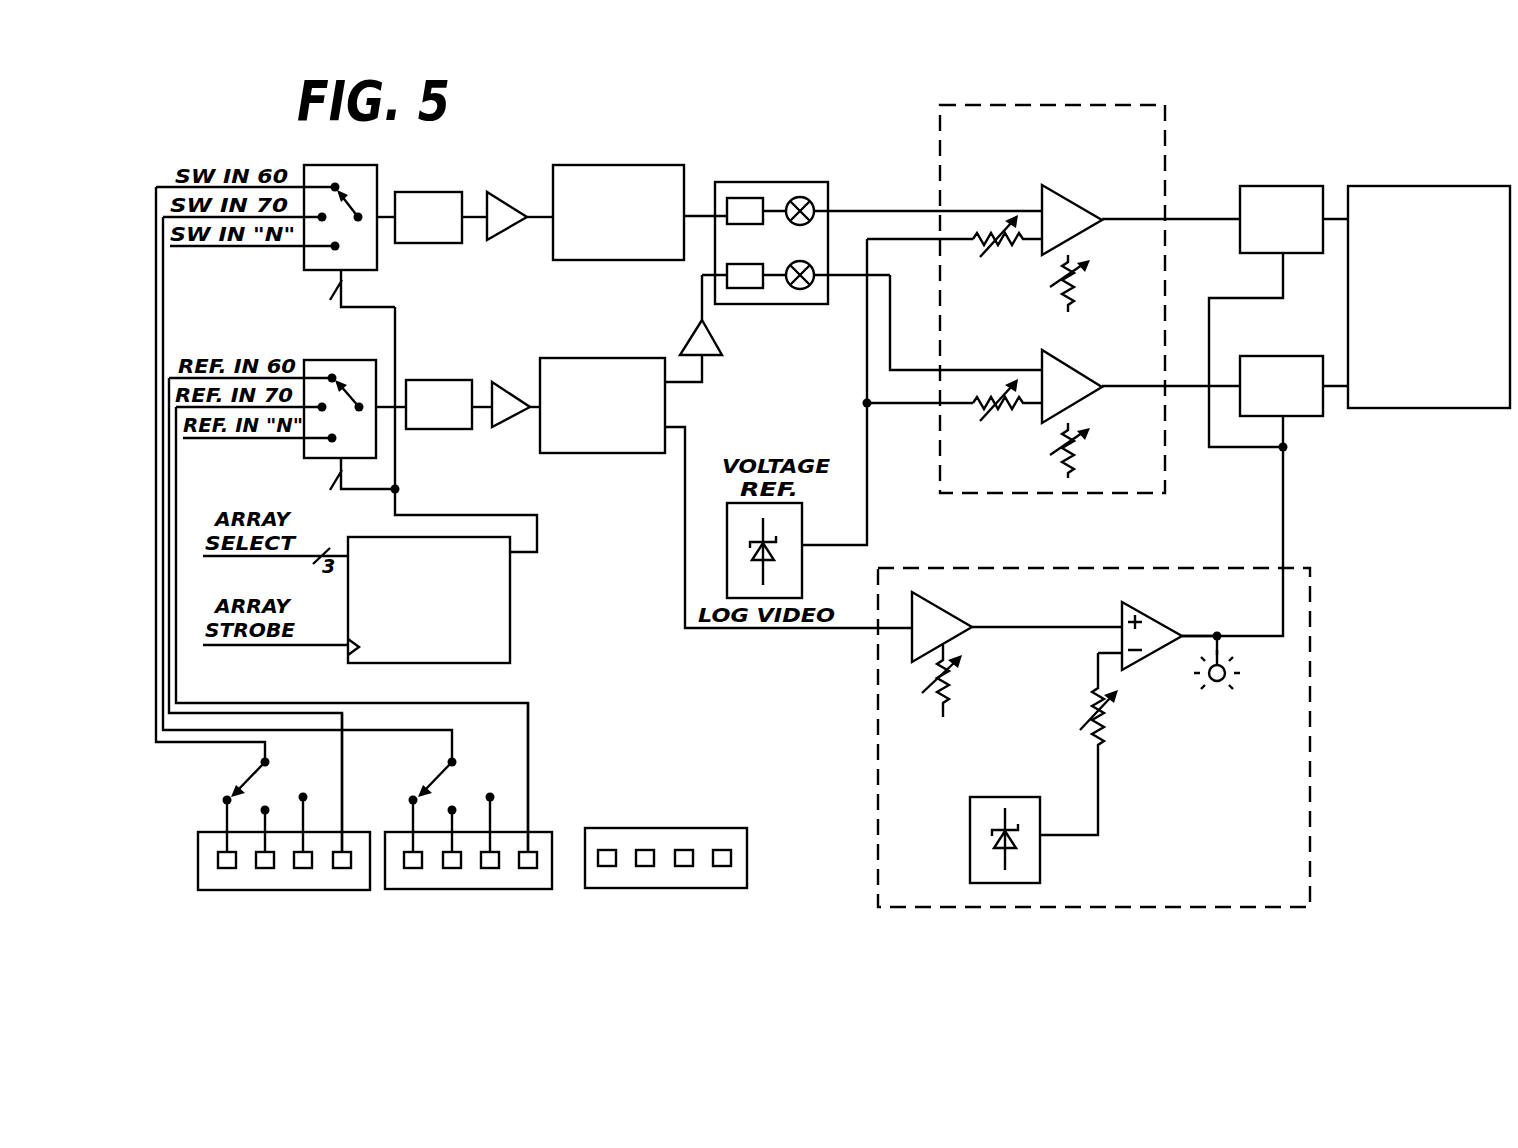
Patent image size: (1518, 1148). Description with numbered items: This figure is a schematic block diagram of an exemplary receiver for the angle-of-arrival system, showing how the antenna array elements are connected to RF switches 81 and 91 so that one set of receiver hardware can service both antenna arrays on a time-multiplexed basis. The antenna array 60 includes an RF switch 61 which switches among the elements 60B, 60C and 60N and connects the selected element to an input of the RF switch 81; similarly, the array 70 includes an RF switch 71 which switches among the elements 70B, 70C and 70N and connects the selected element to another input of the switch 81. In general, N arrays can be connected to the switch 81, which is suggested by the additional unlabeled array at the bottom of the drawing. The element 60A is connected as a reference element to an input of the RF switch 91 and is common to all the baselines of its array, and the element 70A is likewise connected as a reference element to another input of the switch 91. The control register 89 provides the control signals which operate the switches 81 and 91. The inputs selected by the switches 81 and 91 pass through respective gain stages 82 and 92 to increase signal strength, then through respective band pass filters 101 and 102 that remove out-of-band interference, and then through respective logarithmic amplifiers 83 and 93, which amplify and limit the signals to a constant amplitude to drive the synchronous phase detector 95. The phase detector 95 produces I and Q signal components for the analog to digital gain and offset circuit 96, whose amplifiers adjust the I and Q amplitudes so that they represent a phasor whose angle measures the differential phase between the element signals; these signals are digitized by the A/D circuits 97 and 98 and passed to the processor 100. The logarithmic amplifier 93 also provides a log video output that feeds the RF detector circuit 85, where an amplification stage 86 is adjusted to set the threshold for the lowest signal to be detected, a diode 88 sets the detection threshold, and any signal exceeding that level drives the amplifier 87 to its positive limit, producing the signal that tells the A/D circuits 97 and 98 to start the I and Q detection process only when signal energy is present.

The RF switch 81 is at (357, 165).
The band pass filter 101 is at (428, 192).
The gain stage 82 is at (505, 203).
The logarithmic amplifier 83 is at (612, 165).
The synchronous phase detector 95 is at (765, 304).
The analog to digital gain and offset circuit 96 is at (940, 131).
The A/D circuit 97 is at (1283, 186).
The A/D circuit 98 is at (1283, 356).
The processor 100 is at (1455, 186).
The RF switch 91 is at (305, 458).
The band pass filter 102 is at (443, 380).
The gain stage 92 is at (506, 422).
The logarithmic amplifier 93 is at (600, 453).
The control register 89 is at (510, 633).
The circuit 85 is at (1125, 737).
The amplification stage 86 is at (950, 612).
The amplifier 87 is at (1160, 615).
The diode 88 is at (970, 818).
The antenna array 60 is at (289, 819).
The RF switch 61 is at (286, 778).
The reference element 60A is at (346, 852).
The array element 60B is at (303, 868).
The array element 60C is at (265, 868).
The array element 60N is at (227, 868).
The antenna array 70 is at (495, 814).
The RF switch 71 is at (468, 770).
The reference element 70A is at (540, 852).
The array element 70B is at (490, 868).
The array element 70C is at (452, 868).
The array element 70N is at (413, 868).
The arrays N is at (748, 857).